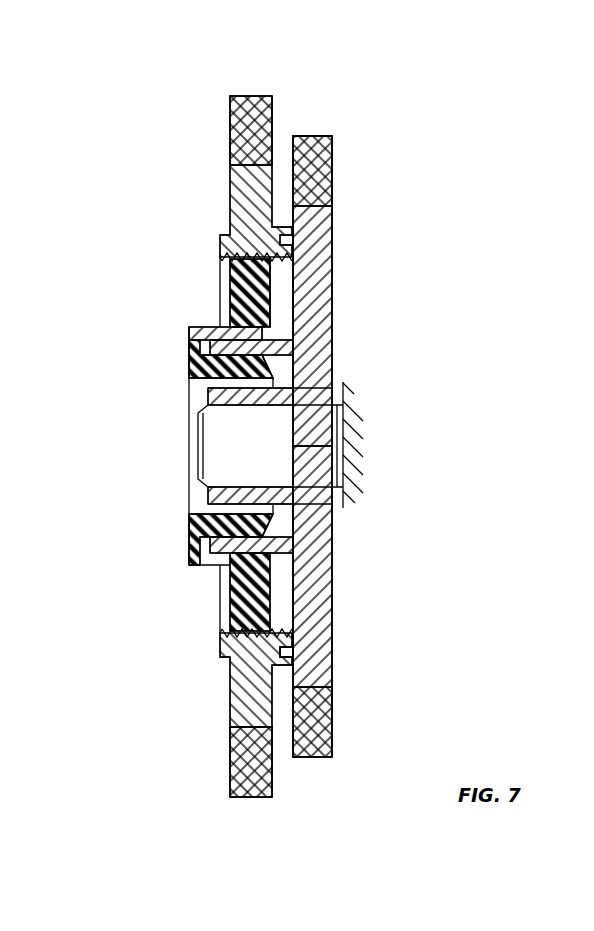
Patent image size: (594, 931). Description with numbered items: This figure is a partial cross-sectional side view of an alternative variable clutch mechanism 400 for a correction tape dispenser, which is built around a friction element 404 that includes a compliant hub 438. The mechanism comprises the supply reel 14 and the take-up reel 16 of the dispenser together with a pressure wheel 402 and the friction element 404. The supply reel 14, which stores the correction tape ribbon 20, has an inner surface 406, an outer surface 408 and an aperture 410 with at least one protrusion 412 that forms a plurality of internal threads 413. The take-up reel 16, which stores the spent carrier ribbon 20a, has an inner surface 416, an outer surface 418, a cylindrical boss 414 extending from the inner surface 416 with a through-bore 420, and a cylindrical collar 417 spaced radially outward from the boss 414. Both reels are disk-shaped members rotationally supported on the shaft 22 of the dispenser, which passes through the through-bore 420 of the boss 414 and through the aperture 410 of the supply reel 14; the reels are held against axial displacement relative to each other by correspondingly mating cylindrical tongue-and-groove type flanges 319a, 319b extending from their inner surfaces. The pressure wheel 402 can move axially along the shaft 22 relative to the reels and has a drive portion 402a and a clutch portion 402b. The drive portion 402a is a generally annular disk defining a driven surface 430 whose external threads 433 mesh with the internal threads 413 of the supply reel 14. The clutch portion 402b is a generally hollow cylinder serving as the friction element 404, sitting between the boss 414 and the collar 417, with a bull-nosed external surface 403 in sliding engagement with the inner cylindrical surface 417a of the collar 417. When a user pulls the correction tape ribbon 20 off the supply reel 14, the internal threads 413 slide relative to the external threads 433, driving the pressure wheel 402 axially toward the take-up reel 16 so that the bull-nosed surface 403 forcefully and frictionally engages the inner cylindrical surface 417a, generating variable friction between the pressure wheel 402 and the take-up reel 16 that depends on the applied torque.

The variable clutch mechanism 400 is at (410, 110).
The correction tape ribbon 20 is at (230, 123).
The carrier ribbon 20a is at (330, 158).
The supply reel 14 is at (238, 210).
The take-up reel 16 is at (327, 243).
The inner surface 406 is at (277, 195).
The drive portion 402a is at (237, 288).
The clutch portion 402b is at (227, 377).
The bull-nosed external surface 403 is at (260, 355).
The friction element 404 is at (276, 371).
The cylindrical collar 417 is at (250, 343).
The shaft 22 is at (211, 442).
The through-bore 420 is at (303, 487).
The cylindrical boss 414 is at (205, 506).
The compliant hub 438 is at (262, 527).
The inner cylindrical surface 417a is at (270, 537).
The pressure wheel 402 is at (184, 570).
The aperture 410 is at (164, 596).
The protrusion 412 is at (250, 592).
The internal threads 413 is at (227, 632).
The driven surface 430 is at (166, 626).
The external threads 433 is at (228, 662).
The outer surface 408 is at (235, 703).
The outer surface 418 is at (333, 583).
The tongue-and-groove type flange 319a is at (295, 638).
The tongue-and-groove type flange 319b is at (275, 668).
The inner surface 416 is at (292, 667).